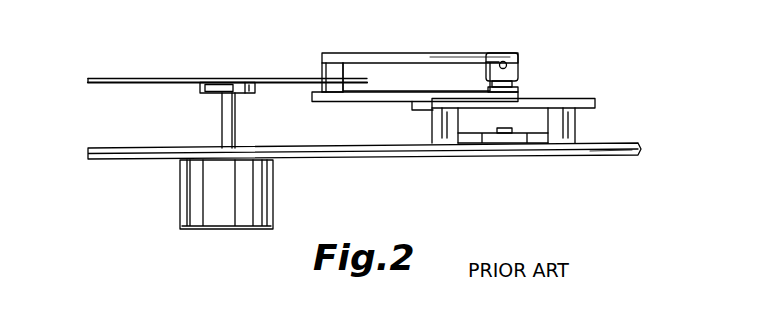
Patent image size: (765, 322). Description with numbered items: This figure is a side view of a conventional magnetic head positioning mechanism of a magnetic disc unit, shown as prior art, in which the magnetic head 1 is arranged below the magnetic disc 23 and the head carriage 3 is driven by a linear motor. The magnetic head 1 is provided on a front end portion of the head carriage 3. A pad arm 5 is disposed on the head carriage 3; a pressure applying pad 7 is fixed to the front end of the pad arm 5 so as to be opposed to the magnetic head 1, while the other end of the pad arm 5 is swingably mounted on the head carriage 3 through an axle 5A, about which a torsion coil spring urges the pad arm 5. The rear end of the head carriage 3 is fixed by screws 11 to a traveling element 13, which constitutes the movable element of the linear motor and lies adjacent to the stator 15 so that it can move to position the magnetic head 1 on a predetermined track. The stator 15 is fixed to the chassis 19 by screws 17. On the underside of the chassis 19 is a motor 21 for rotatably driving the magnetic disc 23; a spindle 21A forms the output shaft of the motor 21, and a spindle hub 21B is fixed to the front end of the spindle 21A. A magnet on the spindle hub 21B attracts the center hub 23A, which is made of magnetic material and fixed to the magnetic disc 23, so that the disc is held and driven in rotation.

The magnetic head 1 is at (333, 85).
The head carriage 3 is at (374, 96).
The pad arm 5 is at (416, 55).
The axle 5A is at (518, 56).
The pressure applying pad 7 is at (337, 64).
The screws 11 is at (518, 73).
The traveling element 13 is at (562, 103).
The stator 15 is at (558, 135).
The screws 17 is at (503, 133).
The chassis 19 is at (606, 156).
The motor 21 is at (223, 216).
The spindle 21A is at (222, 108).
The spindle hub 21B is at (240, 93).
The magnetic disc 23 is at (101, 78).
The center hub 23A is at (208, 82).